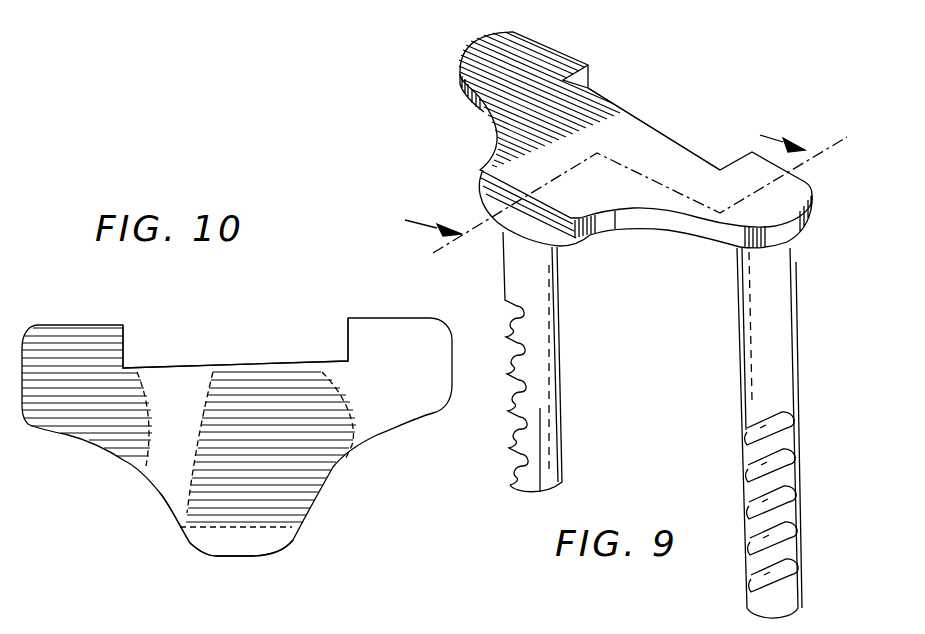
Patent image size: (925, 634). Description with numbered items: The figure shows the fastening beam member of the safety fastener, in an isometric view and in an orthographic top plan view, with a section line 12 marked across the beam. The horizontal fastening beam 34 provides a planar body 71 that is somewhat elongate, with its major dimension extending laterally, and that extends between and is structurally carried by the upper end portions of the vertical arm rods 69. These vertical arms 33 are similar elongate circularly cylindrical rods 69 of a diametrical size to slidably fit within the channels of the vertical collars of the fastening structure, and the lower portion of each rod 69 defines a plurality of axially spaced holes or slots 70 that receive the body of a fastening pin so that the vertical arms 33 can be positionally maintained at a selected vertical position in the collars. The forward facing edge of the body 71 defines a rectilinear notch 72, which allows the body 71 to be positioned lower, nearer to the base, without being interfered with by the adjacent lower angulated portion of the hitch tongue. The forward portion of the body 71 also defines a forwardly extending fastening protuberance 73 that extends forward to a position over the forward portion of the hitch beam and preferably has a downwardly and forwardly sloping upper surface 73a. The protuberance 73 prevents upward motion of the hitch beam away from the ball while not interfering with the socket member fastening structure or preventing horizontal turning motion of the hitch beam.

In FIG. 9, the section line 12- 12 is at (626, 179).
In FIG. 9, the vertical arms 33 is at (674, 425).
In FIG. 10, the horizontal fastening beam 34 is at (116, 471).
In FIG. 9, the horizontal fastening beam 34 is at (568, 33).
In FIG. 9, the rods 69 is at (527, 292).
In FIG. 9, the holes or slots 70 is at (517, 388).
In FIG. 10, the planar body 71 is at (183, 397).
In FIG. 9, the planar body 71 is at (655, 163).
In FIG. 10, the rectilinear notch 72 is at (233, 355).
In FIG. 9, the rectilinear notch 72 is at (616, 104).
In FIG. 10, the fastening protuberance 73 is at (291, 542).
In FIG. 9, the fastening protuberance 73 is at (483, 183).
In FIG. 10, the upper surface 73a is at (233, 542).
In FIG. 9, the upper surface 73a is at (565, 225).